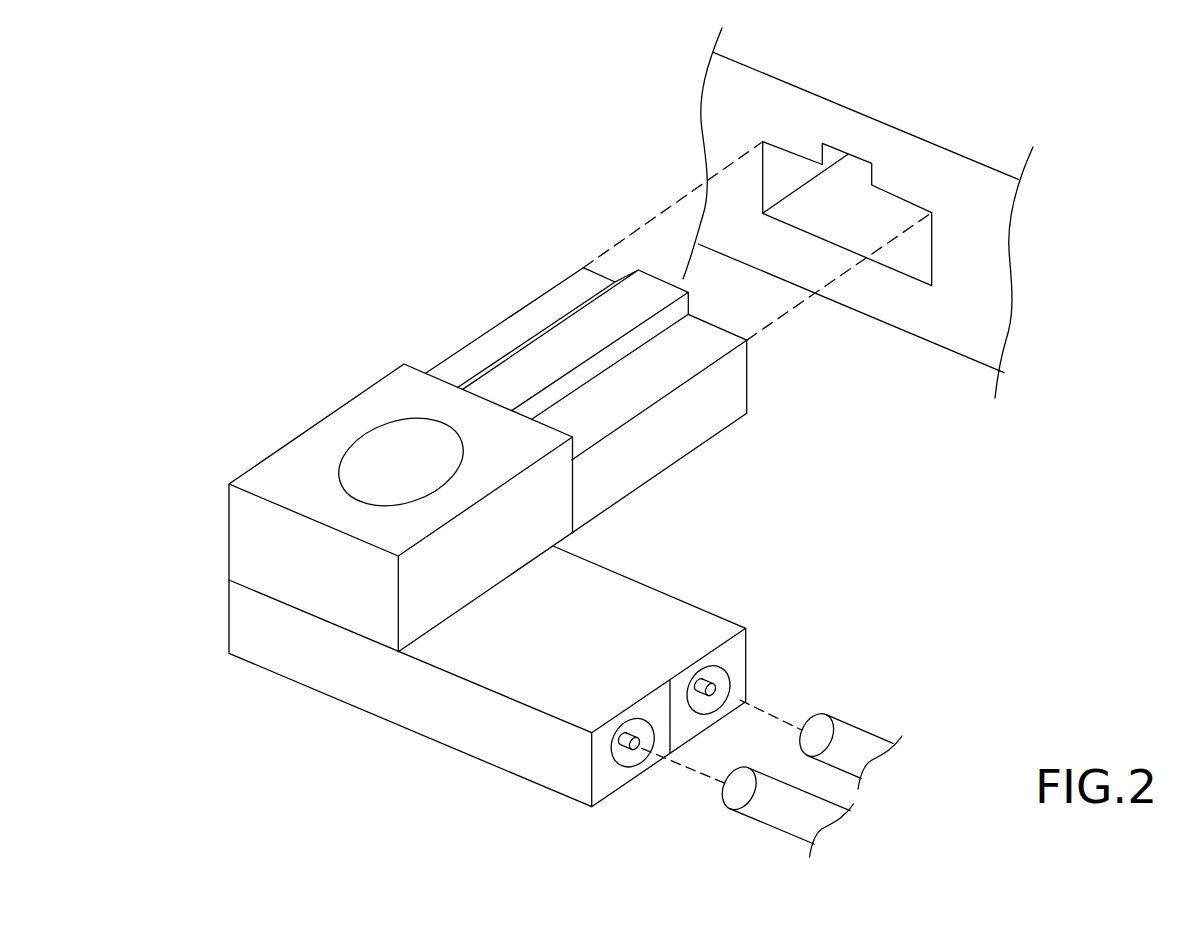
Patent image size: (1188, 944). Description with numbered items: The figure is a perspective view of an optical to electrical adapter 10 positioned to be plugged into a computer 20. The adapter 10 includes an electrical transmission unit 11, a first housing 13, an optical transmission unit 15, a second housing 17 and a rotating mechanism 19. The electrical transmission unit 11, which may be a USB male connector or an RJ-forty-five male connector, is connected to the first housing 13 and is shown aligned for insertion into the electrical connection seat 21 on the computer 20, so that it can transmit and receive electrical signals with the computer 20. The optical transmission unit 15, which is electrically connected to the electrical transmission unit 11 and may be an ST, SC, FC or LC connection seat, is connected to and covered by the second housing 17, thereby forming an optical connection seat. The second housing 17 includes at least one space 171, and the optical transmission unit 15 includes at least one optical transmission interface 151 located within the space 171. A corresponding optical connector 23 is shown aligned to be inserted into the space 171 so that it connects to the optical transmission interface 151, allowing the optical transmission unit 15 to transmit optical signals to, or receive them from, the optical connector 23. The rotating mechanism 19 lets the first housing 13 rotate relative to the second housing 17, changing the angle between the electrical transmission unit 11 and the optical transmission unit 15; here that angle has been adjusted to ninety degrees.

The optical to electrical adapter 10 is at (197, 225).
The electrical transmission unit 11 is at (533, 310).
The first housing 13 is at (382, 410).
The optical transmission unit 15 is at (638, 768).
The optical transmission interface 151 is at (710, 689).
The second housing 17 is at (525, 751).
The space 171 is at (722, 675).
The rotating mechanism 19 is at (373, 462).
The computer 20 is at (962, 168).
The electrical connection seat 21 is at (912, 270).
The optical connector 23 is at (785, 823).